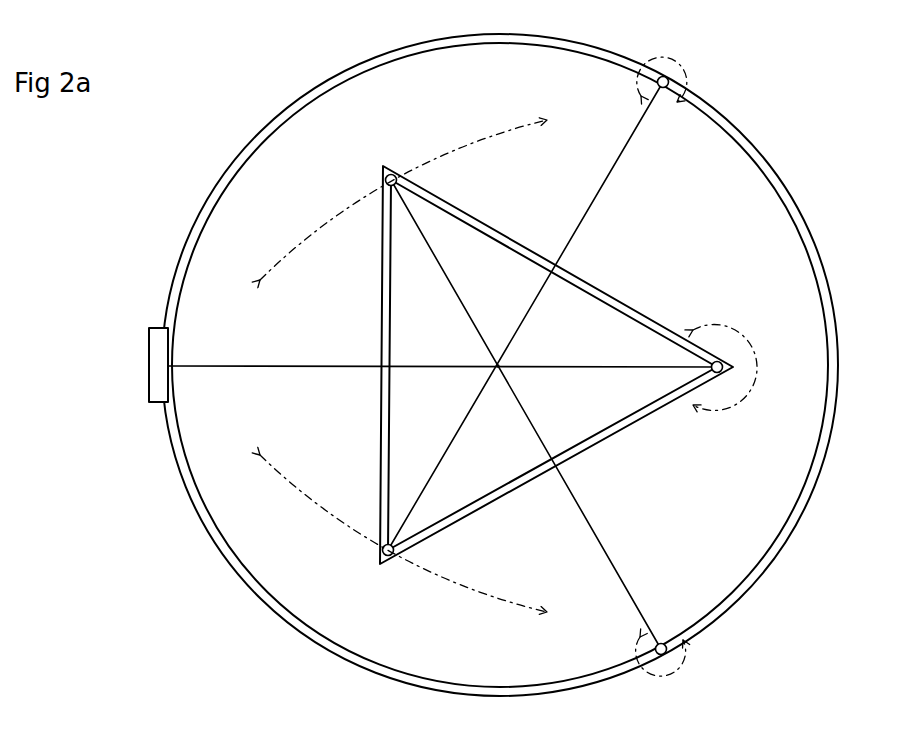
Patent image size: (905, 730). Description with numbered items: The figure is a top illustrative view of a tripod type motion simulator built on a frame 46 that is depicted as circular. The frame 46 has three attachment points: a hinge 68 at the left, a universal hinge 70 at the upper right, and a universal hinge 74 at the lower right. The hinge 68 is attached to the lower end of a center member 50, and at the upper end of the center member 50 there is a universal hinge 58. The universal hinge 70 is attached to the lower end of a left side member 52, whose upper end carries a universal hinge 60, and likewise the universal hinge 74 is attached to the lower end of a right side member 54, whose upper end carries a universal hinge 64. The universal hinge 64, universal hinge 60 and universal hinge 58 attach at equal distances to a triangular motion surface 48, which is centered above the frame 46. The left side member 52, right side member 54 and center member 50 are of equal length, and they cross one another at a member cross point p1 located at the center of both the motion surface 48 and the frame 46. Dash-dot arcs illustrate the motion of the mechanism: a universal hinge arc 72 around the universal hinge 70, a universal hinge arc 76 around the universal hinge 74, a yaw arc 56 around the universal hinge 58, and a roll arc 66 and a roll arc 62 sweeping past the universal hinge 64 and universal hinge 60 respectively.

The frame 46 is at (787, 182).
The motion surface 48 is at (379, 419).
The center member 50 is at (290, 353).
The left side member 52 is at (598, 210).
The right side member 54 is at (600, 522).
The yaw arc 56 is at (742, 318).
The universal hinge 58 is at (728, 378).
The universal hinge 60 is at (379, 562).
The roll arc 62 is at (305, 508).
The universal hinge 64 is at (386, 177).
The roll arc 66 is at (502, 125).
The hinge 68 is at (148, 362).
The universal hinge 70 is at (663, 76).
The universal hinge arc 72 is at (712, 90).
The universal hinge 74 is at (672, 656).
The universal hinge arc 76 is at (700, 640).
The member cross point p1 is at (480, 353).